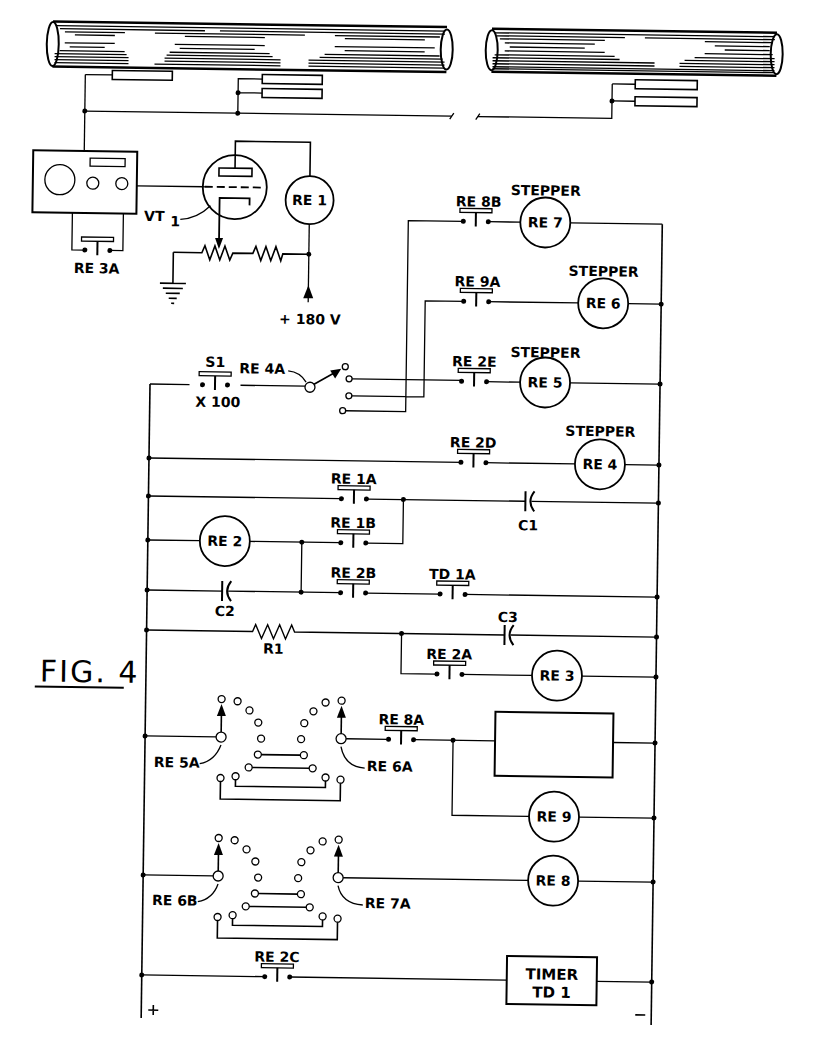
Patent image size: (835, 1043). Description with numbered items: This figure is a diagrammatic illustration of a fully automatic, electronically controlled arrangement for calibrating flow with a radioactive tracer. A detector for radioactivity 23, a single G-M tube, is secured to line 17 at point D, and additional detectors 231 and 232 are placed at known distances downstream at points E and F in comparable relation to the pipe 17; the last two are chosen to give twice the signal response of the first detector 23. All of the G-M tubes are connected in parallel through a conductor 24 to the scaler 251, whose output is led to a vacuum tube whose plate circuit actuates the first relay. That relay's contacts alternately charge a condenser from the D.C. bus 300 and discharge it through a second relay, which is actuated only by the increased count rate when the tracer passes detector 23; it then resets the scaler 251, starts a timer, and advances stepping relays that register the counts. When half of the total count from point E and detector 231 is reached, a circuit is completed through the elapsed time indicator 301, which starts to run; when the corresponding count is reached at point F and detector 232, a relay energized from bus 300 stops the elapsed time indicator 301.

The line 17 is at (415, 19).
The detector for radioactivity 23 is at (138, 80).
The additional detector 231 is at (318, 80).
The additional detector 232 is at (662, 99).
The conductor 24 is at (520, 112).
The scaler 251 is at (118, 152).
The elapsed time indicator 301 is at (595, 707).
The D.C. bus 300 is at (149, 1010).